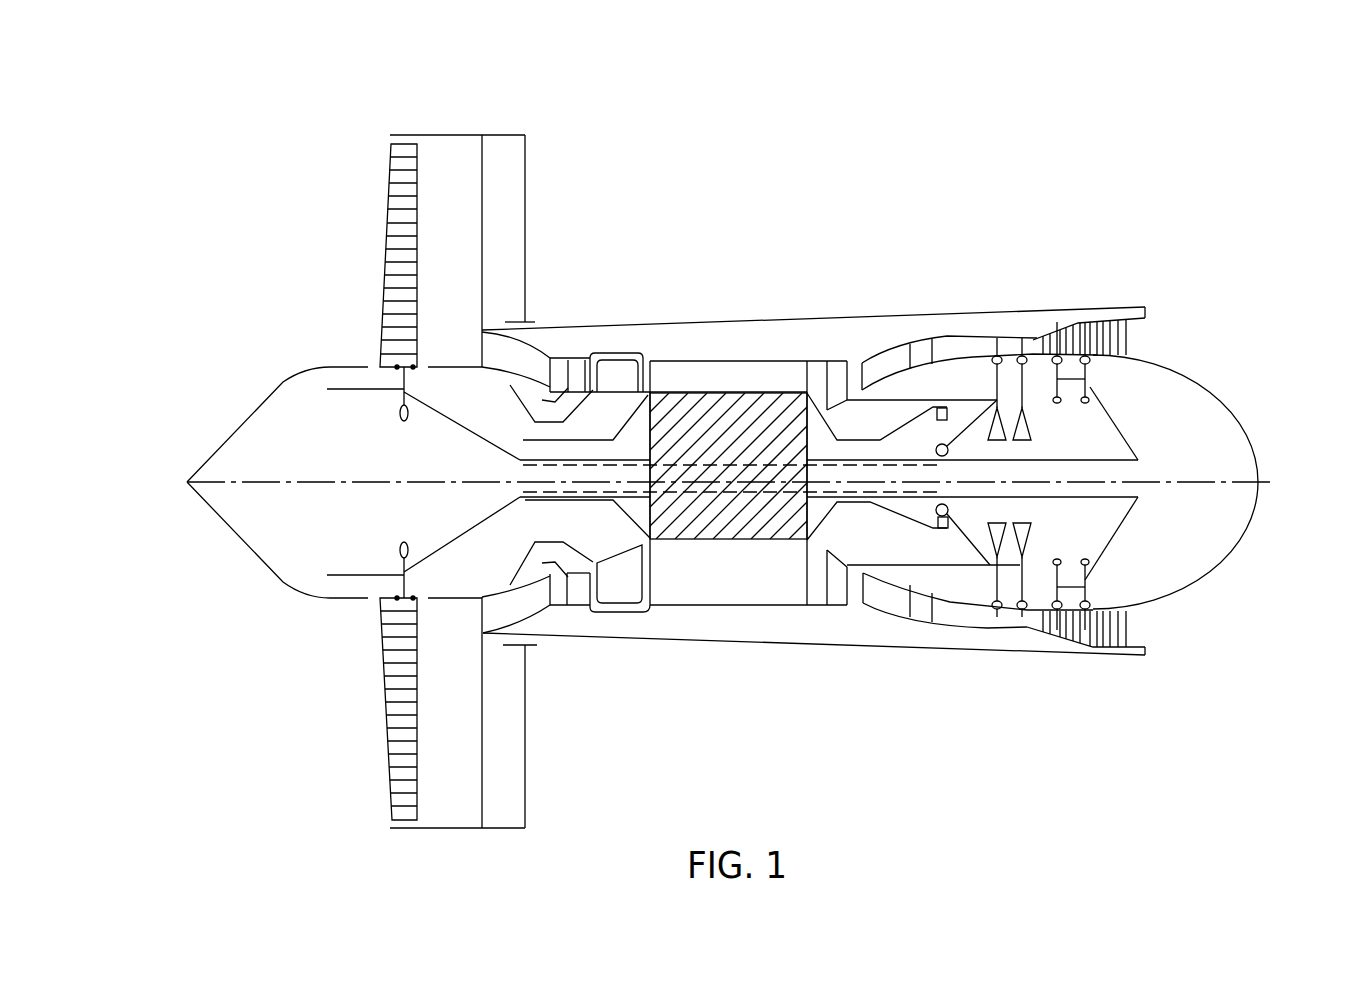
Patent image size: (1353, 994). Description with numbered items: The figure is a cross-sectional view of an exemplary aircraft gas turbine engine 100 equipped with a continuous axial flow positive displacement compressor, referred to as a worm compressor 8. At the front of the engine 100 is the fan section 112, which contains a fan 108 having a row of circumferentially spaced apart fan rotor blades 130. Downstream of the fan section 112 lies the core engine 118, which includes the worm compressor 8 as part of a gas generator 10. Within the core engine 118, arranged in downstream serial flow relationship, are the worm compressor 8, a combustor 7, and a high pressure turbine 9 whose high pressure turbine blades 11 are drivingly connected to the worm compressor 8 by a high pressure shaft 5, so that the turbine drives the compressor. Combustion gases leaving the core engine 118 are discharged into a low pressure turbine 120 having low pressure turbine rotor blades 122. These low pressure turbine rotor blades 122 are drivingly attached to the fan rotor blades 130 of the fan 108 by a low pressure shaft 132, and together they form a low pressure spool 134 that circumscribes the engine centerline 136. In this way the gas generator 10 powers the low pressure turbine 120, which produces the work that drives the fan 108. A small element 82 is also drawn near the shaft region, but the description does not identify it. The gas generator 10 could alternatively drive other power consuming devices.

The gas turbine engine 100 is at (728, 676).
The fan section 112 is at (458, 430).
The fan rotor blades 130 is at (413, 275).
The fan 108 is at (380, 337).
The core engine 118 is at (813, 436).
The low pressure spool 134 is at (583, 460).
The worm compressor 8 is at (755, 361).
The gas generator 10 is at (821, 551).
The combustor 7 is at (947, 336).
The high pressure shaft 5 is at (955, 568).
The high pressure turbine 9 is at (1008, 338).
The high pressure turbine blades 11 is at (1022, 617).
The low pressure turbine 120 is at (1077, 322).
The low pressure turbine rotor blades 122 is at (1087, 623).
The low pressure shaft 132 is at (1058, 460).
The sensor 82 is at (942, 530).
The engine centerline 136 is at (1190, 483).